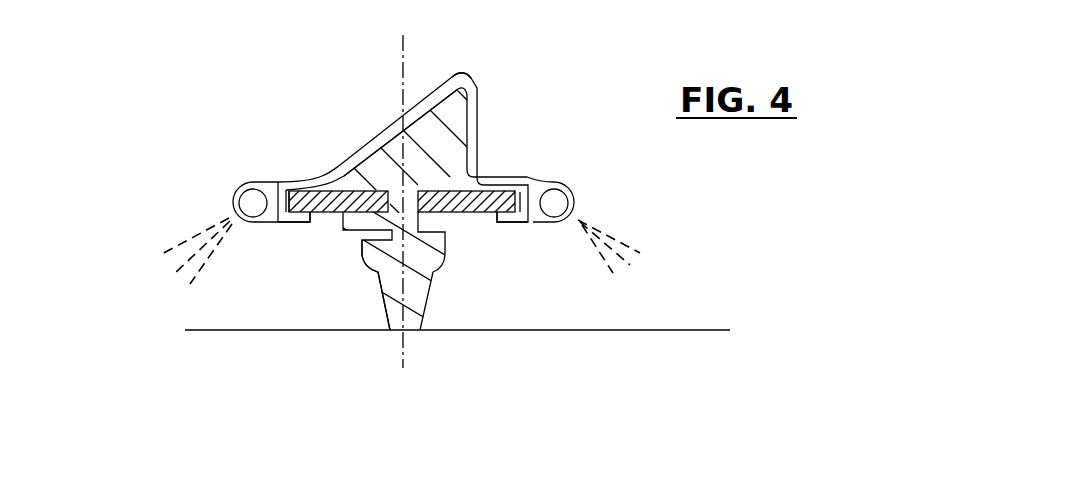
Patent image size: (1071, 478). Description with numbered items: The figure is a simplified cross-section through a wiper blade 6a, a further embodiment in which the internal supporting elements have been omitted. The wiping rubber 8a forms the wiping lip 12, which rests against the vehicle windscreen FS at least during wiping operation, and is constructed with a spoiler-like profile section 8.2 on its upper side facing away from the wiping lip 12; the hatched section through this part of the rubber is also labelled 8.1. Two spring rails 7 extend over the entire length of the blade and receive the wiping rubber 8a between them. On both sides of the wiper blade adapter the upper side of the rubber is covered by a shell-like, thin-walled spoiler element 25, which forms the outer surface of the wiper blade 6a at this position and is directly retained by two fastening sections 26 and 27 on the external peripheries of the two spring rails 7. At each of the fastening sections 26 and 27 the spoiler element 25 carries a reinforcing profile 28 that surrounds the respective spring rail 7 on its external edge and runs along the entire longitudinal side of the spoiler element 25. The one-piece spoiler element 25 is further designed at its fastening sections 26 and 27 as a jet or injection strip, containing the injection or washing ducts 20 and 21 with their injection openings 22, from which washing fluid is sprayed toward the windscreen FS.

The wiper blade 6a is at (524, 112).
The spring rail 7 is at (336, 178).
The hood section 8.1 is at (412, 192).
The spoiler-like profile section 8.2 is at (437, 107).
The wiping rubber 8a is at (368, 282).
The wiping lip 12 is at (413, 308).
The injection or washing duct 20 is at (252, 188).
The injection or washing duct 21 is at (554, 200).
The injection opening 22 is at (233, 216).
The spoiler element 25 is at (448, 70).
The fastening section 26 is at (289, 233).
The fastening section 27 is at (521, 230).
The reinforcing profile 28 is at (292, 188).
The vehicle windscreen FS is at (646, 330).